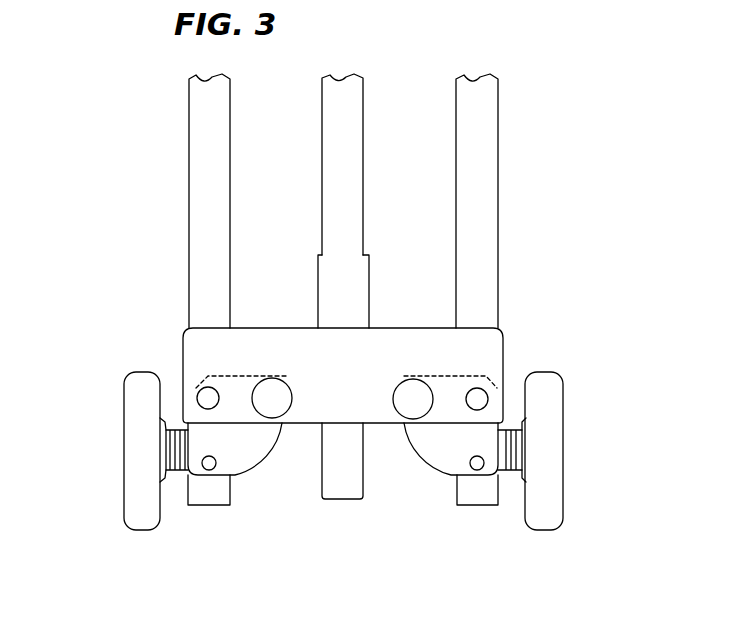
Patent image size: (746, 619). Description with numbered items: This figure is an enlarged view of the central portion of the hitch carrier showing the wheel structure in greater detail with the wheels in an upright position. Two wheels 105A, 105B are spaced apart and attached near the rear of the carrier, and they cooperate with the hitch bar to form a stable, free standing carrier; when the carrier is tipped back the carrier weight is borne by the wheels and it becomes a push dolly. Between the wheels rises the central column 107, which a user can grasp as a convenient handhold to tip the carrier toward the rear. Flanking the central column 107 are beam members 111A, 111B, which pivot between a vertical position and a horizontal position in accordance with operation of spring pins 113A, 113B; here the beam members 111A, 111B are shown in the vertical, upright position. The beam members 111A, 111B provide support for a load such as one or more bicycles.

The wheel 105A is at (123, 493).
The wheel 105B is at (564, 493).
The central column 107 is at (364, 150).
The beam member 111A is at (231, 152).
The beam member 111B is at (499, 152).
The spring pin 113A is at (284, 392).
The spring pin 113B is at (402, 392).